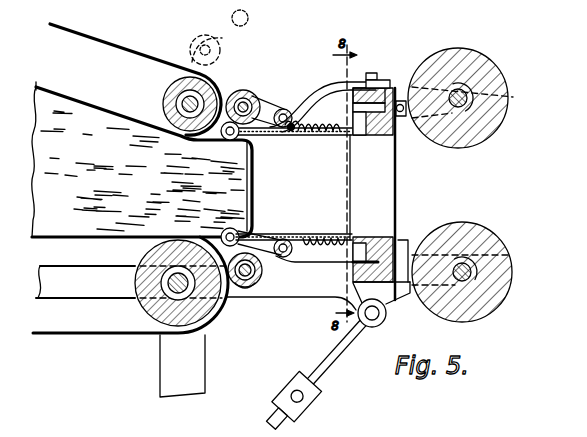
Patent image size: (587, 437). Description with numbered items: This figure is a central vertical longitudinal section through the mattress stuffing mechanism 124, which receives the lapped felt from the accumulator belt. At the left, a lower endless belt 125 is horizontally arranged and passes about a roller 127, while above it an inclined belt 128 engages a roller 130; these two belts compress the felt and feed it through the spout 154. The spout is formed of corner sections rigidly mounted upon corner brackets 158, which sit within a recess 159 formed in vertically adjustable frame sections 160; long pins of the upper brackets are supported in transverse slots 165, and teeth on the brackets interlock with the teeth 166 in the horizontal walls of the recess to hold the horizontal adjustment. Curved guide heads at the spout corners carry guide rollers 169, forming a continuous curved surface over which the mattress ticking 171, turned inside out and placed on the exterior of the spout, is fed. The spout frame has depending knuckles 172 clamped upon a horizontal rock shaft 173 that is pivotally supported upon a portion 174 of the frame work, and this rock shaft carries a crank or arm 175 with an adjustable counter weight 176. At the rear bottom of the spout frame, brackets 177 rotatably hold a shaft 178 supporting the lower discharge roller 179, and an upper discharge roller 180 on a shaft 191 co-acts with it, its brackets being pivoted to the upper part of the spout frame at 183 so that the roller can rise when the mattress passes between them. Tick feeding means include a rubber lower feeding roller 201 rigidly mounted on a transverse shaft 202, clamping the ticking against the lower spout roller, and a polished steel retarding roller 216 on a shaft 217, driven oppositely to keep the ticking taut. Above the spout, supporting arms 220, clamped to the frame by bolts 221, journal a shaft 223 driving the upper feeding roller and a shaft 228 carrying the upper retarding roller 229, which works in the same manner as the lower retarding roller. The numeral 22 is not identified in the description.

The inclined belt 128 is at (108, 45).
The roller 130 is at (163, 94).
The retarding roller 229 is at (222, 17).
The roller 22 is at (237, 72).
The stuffing mechanism 124 is at (284, 79).
The shaft 223 is at (283, 108).
The supporting arms 220 is at (334, 86).
The shaft 228 is at (293, 140).
The mattress ticking 171 is at (324, 136).
The guide rollers 169 is at (255, 137).
The spout 154 is at (394, 183).
The recess 159 is at (390, 90).
The frame sections 160 is at (372, 86).
The bolts 221 is at (367, 73).
The pivot 183 is at (405, 118).
The upper discharge roller 180 is at (497, 123).
The shaft 191 is at (472, 97).
The shaft 178 is at (512, 281).
The discharge roller 179 is at (500, 256).
The brackets 177 is at (407, 255).
The corner brackets 158 is at (372, 240).
The transverse slots 165 is at (352, 258).
The teeth 166 is at (352, 272).
The shaft 217 is at (292, 236).
The retarding roller 216 is at (284, 257).
The lower endless belt 125 is at (92, 332).
The roller 127 is at (165, 318).
The transverse shaft 202 is at (252, 286).
The lower feeding roller 201 is at (242, 291).
The portion of the frame work 174 is at (316, 292).
The crank or arm 175 is at (332, 368).
The counter weight 176 is at (314, 410).
The depending knuckles 172 is at (384, 302).
The rock shaft 173 is at (374, 327).